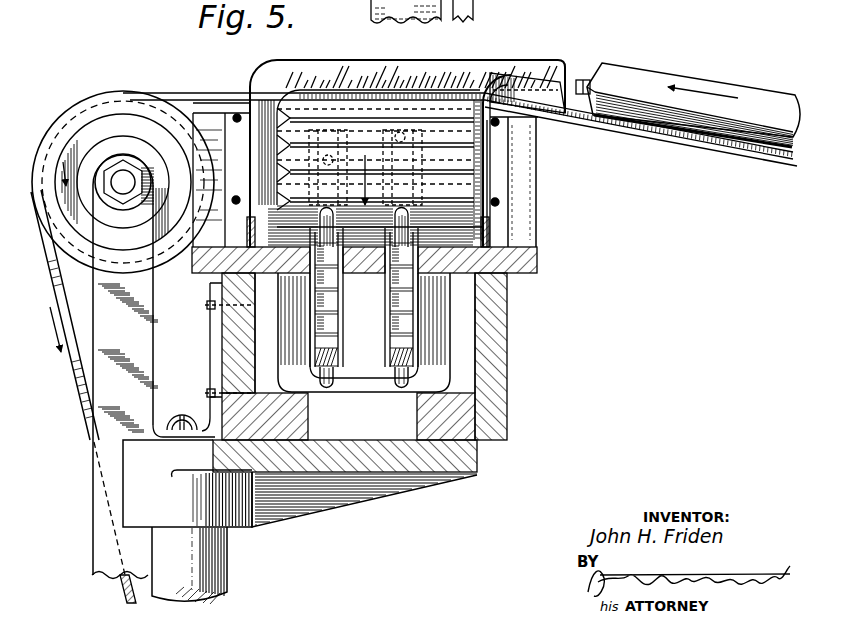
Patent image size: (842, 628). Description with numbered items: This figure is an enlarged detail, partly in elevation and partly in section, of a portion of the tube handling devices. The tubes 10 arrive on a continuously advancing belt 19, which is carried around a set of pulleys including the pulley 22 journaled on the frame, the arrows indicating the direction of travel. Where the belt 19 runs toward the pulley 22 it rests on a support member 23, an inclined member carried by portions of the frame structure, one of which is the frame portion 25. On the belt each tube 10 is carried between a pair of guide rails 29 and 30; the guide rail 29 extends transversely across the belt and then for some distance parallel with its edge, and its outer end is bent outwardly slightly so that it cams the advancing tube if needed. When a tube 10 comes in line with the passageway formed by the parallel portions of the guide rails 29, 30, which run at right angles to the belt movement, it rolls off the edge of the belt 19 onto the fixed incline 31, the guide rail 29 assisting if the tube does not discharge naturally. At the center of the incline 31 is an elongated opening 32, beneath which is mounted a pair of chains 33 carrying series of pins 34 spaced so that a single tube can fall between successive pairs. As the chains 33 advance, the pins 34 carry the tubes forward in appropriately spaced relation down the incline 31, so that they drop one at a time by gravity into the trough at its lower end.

The tubes 10 is at (390, 113).
The belt 19 is at (68, 401).
The pulley 22 is at (80, 115).
The support member 23 is at (731, 152).
The frame portion 25 is at (506, 299).
The guide rail 29 is at (451, 67).
The guide rail 30 is at (543, 100).
The fixed incline 31 is at (532, 191).
The elongated opening 32 is at (392, 266).
The chains 33 is at (394, 307).
The pins 34 is at (398, 385).